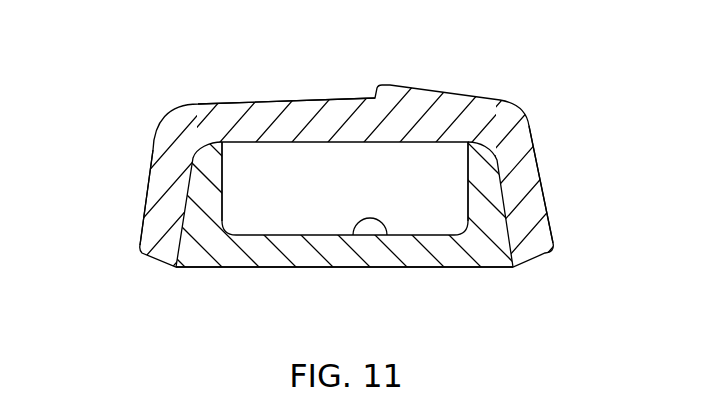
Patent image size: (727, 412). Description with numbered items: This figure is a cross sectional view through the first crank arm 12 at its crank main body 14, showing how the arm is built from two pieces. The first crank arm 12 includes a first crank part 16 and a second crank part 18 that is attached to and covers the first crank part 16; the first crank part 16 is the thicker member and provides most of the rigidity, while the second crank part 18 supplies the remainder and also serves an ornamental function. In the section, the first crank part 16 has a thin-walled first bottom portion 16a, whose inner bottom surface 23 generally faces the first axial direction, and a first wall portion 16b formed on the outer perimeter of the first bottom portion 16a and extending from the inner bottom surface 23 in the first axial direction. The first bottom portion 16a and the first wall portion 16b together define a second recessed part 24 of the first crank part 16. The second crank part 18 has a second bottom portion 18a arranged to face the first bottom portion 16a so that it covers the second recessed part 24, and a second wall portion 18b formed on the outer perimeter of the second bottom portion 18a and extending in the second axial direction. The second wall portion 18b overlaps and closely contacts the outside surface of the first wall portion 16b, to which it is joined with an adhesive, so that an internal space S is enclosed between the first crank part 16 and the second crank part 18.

The first crank arm 12 is at (120, 122).
The crank main body 14 is at (488, 62).
The first crank part 16 is at (447, 283).
The first bottom portion 16a is at (245, 270).
The first wall portion 16b is at (227, 178).
The second crank part 18 is at (343, 72).
The second bottom portion 18a is at (272, 97).
The second wall portion 18b is at (148, 192).
The inner bottom surface 23 is at (354, 222).
The second recessed part 24 is at (392, 160).
The internal space S is at (428, 168).